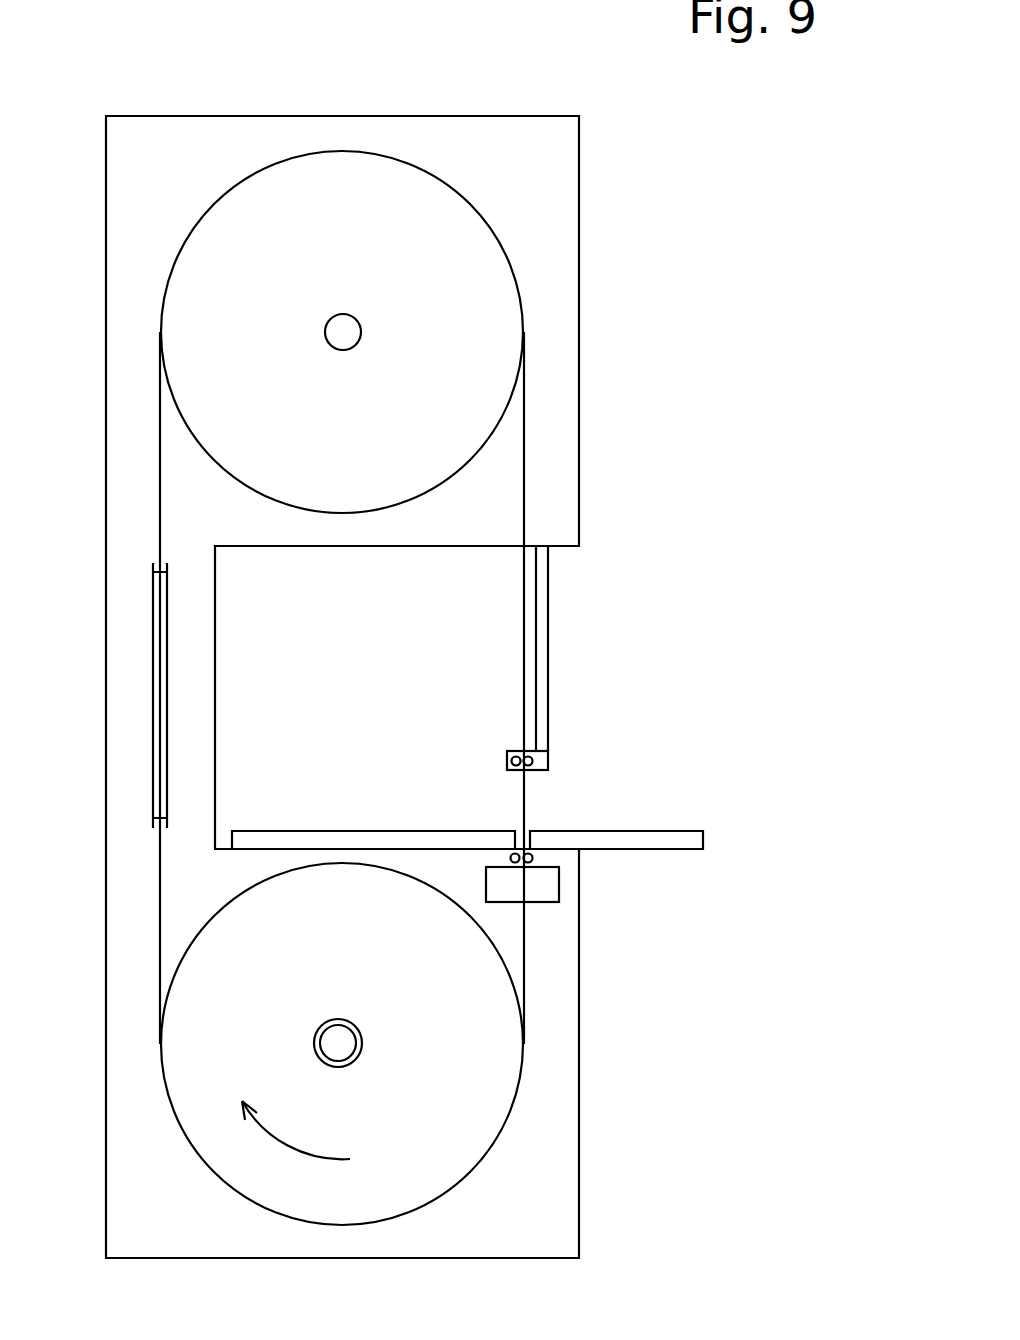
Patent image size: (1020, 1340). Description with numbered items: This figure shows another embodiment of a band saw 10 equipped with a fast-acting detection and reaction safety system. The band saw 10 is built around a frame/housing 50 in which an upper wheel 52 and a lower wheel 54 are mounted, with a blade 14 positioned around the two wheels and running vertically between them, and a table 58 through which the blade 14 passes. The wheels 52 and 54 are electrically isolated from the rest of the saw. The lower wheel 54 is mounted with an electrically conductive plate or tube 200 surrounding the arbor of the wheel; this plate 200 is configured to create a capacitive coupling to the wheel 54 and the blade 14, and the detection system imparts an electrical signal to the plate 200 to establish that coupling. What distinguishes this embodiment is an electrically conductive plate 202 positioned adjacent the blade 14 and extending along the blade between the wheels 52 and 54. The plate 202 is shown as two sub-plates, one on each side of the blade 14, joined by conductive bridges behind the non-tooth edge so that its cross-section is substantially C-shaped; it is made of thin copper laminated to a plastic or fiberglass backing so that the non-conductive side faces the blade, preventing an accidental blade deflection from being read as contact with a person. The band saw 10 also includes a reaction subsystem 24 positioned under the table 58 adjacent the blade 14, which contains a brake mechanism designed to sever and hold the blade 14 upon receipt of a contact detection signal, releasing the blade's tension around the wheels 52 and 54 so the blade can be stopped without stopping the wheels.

The band saw 10 is at (638, 236).
The blade 14 is at (523, 796).
The reaction subsystem 24 is at (542, 903).
The frame/housing 50 is at (582, 382).
The wheel 52 is at (342, 332).
The wheel 54 is at (342, 1044).
The table 58 is at (650, 830).
The electrically conductive plate or tube 200 is at (333, 1068).
The electrically conductive plate 202 is at (152, 630).